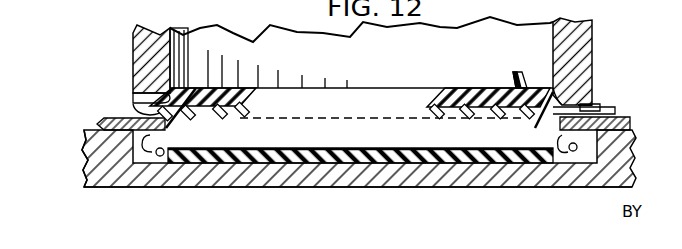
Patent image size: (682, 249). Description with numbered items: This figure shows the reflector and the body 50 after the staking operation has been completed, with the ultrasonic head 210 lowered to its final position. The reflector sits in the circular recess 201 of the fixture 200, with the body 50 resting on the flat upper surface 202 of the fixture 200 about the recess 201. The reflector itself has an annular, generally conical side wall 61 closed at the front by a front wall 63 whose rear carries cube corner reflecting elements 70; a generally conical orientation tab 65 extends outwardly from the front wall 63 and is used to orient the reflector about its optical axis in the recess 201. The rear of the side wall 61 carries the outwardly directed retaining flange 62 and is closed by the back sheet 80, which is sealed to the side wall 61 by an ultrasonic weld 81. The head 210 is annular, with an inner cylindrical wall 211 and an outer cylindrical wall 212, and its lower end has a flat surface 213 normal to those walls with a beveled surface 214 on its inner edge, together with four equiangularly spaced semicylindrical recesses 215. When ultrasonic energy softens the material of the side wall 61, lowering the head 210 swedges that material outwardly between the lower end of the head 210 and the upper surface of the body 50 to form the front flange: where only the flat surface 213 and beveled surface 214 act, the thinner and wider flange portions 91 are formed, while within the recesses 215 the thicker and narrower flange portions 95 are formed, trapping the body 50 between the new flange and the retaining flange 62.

The body 50 is at (130, 117).
The side wall 61 is at (180, 148).
The retaining flange 62 is at (138, 168).
The front wall 63 is at (355, 100).
The orientation tab 65 is at (512, 78).
The reflecting elements 70 is at (234, 115).
The back sheet 80 is at (360, 148).
The ultrasonic weld 81 is at (160, 156).
The flange portions 91 is at (595, 105).
The flange portions 95 is at (98, 163).
The fixture 200 is at (366, 190).
The recess 201 is at (622, 125).
The upper surface 202 is at (100, 123).
The ultrasonic head 210 is at (135, 50).
The inner cylindrical wall 211 is at (553, 53).
The outer cylindrical wall 212 is at (593, 38).
The flat surface 213 is at (590, 102).
The beveled surface 214 is at (555, 87).
The semicylindrical recesses 215 is at (134, 100).